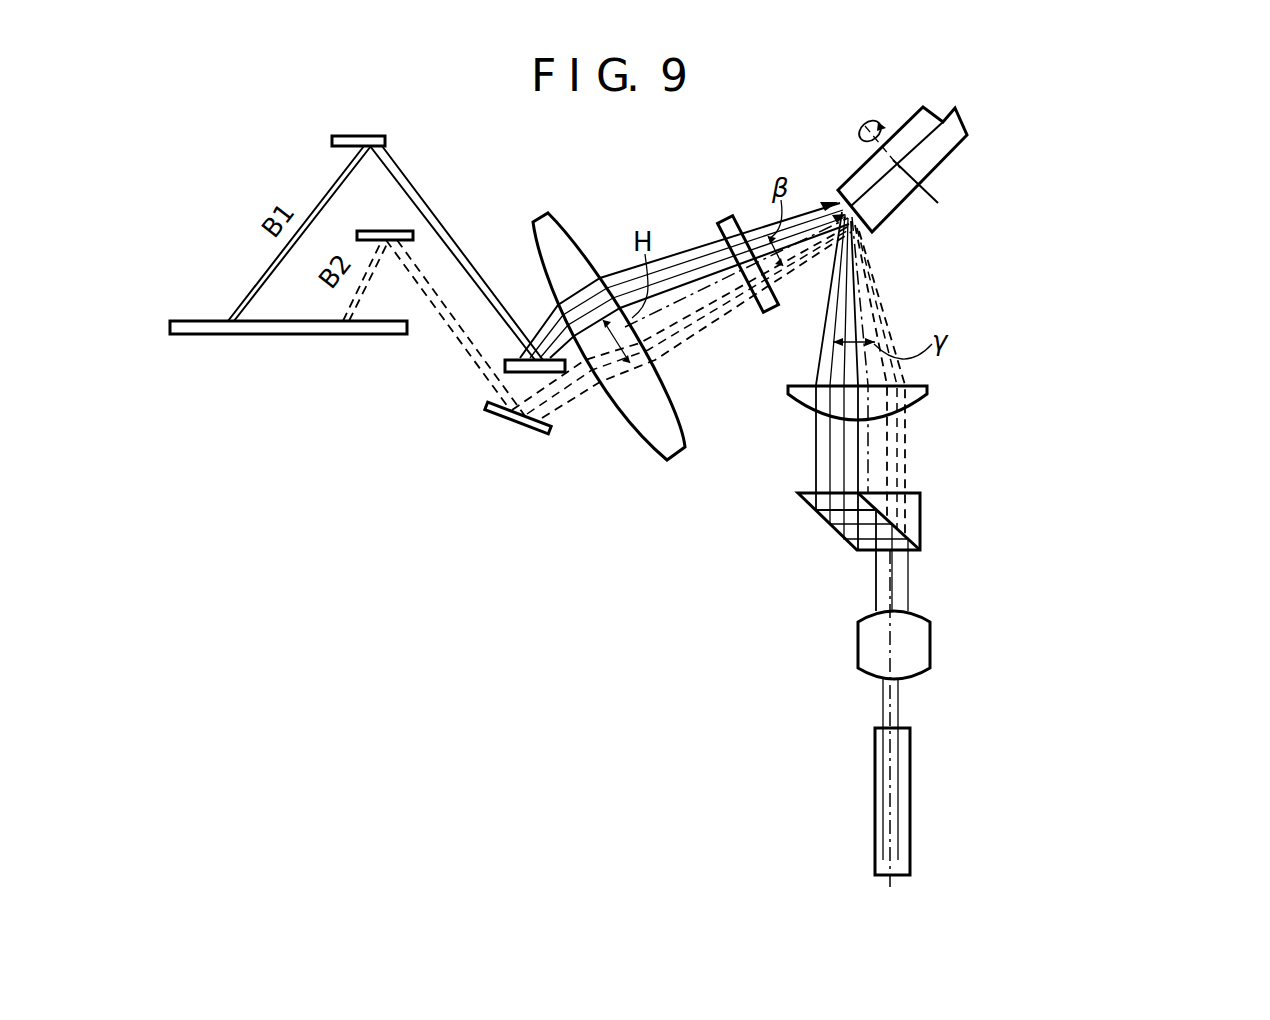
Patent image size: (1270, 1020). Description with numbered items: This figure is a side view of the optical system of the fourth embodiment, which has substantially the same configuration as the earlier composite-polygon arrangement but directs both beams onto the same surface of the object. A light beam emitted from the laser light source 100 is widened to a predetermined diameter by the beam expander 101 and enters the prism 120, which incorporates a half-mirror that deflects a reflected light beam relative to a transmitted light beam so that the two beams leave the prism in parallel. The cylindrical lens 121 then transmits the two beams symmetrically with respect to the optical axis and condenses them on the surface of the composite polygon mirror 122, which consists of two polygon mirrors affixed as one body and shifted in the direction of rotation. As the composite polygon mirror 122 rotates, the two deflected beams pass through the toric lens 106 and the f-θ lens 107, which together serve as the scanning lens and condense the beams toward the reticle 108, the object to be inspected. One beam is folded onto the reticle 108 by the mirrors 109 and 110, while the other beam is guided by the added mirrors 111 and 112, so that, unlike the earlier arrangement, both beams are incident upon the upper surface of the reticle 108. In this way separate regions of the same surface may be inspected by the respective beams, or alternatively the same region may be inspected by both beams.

The laser light source 100 is at (902, 780).
The beam expander 101 is at (922, 643).
The toric lens 106 is at (723, 217).
The f-θ lens 107 is at (551, 231).
The reticle 108 is at (183, 320).
The mirror 109 is at (560, 374).
The mirror 110 is at (387, 142).
The mirror 111 is at (500, 421).
The mirror 112 is at (358, 231).
The prism 120 is at (912, 520).
The cylindrical lens 121 is at (928, 388).
The composite polygon mirror 122 is at (947, 140).